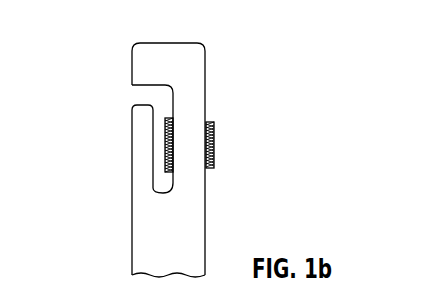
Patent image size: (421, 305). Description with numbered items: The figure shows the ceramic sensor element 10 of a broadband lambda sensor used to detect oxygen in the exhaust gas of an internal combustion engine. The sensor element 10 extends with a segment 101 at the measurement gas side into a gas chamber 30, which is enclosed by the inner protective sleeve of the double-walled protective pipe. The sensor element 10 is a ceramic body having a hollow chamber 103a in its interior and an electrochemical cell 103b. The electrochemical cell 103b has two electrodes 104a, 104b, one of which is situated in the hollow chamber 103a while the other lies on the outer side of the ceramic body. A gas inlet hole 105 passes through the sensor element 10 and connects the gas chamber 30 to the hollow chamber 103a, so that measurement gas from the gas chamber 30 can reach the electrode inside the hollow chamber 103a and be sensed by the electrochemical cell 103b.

The sensor element 10 is at (252, 70).
The segment at the measurement gas side 101 is at (198, 52).
The hollow chamber 103a is at (165, 192).
The electrochemical cell 103b is at (190, 122).
The electrode 104a is at (165, 150).
The electrode 104b is at (214, 150).
The gas inlet hole 105 is at (140, 95).
The gas chamber 30 is at (60, 195).